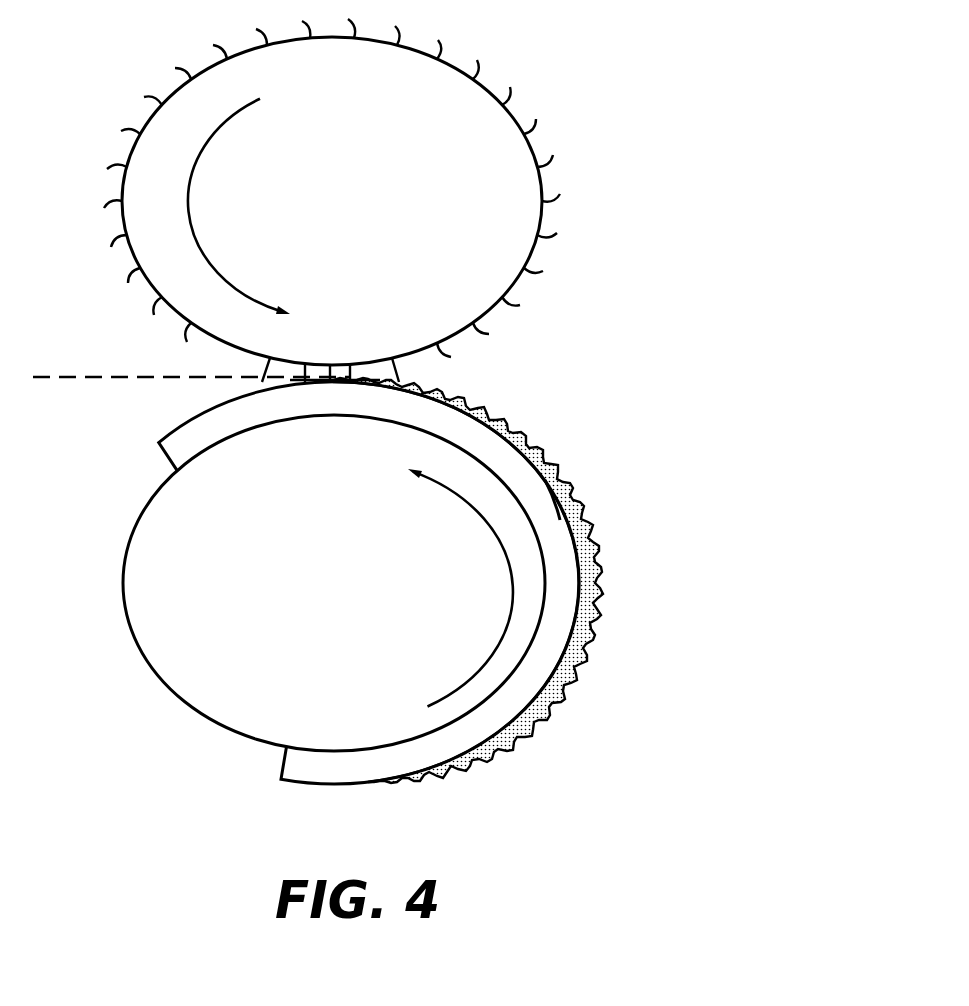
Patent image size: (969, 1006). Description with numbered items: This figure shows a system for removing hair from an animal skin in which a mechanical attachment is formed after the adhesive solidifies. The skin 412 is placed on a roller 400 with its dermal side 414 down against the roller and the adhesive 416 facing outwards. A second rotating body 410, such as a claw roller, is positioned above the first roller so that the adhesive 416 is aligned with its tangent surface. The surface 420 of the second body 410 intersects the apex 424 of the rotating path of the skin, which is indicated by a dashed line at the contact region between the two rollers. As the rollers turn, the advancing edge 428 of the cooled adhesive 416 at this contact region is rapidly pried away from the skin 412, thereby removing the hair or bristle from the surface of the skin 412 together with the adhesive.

The roller 400 is at (172, 668).
The second rotating body 410 is at (488, 126).
The surface of the second body 420 is at (503, 310).
The apex of the rotating path of the skin 424 is at (70, 375).
The advancing edge of the cooled adhesive 428 is at (330, 385).
The skin 412 is at (372, 768).
The dermal side 414 is at (533, 530).
The adhesive 416 is at (522, 433).